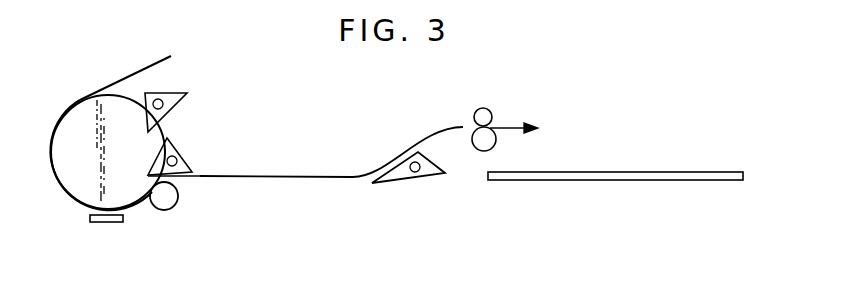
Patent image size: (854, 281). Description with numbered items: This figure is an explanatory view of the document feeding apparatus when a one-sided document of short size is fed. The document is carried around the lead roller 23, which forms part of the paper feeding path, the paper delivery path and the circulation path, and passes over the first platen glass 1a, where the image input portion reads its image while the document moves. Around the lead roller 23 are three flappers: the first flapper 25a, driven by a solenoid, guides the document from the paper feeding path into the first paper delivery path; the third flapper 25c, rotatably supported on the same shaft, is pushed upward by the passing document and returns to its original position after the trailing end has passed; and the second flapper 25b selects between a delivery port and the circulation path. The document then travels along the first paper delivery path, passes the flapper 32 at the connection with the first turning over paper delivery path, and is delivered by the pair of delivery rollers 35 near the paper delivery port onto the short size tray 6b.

The lead roller 23 is at (85, 115).
The first flapper 25a is at (157, 173).
The second flapper 25b is at (176, 94).
The third flapper 25c is at (182, 168).
The first platen glass 1a is at (96, 224).
The flapper 32 is at (404, 176).
The pair of delivery rollers 35 is at (484, 108).
The short size tray 6b is at (688, 172).